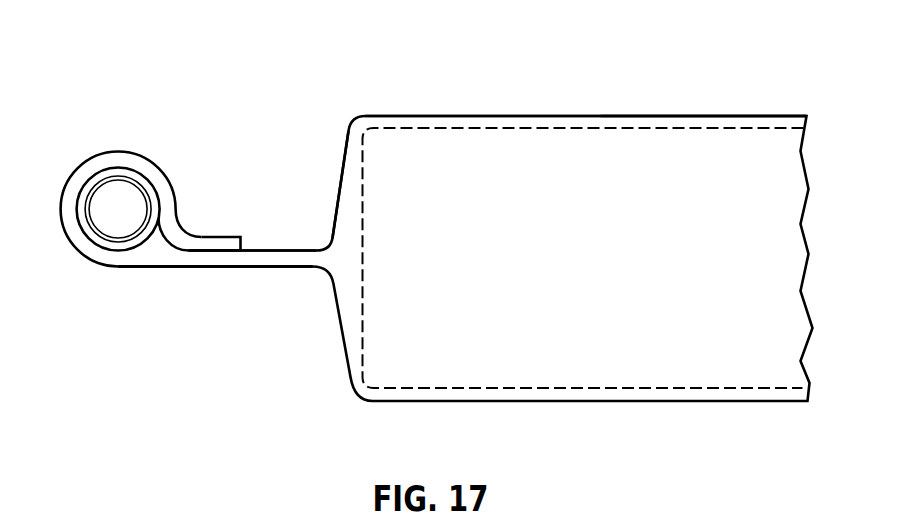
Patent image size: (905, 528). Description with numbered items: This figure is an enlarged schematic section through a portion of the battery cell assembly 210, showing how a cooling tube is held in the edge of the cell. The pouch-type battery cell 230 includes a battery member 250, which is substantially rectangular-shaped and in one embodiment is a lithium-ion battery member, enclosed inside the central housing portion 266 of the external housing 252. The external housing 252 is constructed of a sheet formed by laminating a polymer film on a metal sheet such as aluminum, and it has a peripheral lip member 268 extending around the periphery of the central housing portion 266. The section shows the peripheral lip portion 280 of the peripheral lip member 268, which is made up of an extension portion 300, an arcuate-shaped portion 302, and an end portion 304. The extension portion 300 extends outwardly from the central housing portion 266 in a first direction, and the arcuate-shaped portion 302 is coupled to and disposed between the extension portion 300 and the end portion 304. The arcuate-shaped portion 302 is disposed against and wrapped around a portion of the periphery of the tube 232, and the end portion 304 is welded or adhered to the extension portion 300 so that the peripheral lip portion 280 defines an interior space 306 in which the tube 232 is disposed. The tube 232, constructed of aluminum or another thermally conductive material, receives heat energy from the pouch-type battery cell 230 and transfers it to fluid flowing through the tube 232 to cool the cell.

The battery cell assembly 210 is at (569, 81).
The pouch-type battery cell 230 is at (500, 102).
The tube 232 is at (123, 157).
The battery member 250 is at (640, 127).
The external housing 252 is at (693, 115).
The central housing portion 266 is at (347, 133).
The peripheral lip member 268 is at (285, 267).
The peripheral lip portion 280 is at (277, 249).
The extension portion 300 is at (233, 267).
The arcuate-shaped portion 302 is at (82, 165).
The end portion 304 is at (217, 236).
The interior space 306 is at (153, 189).